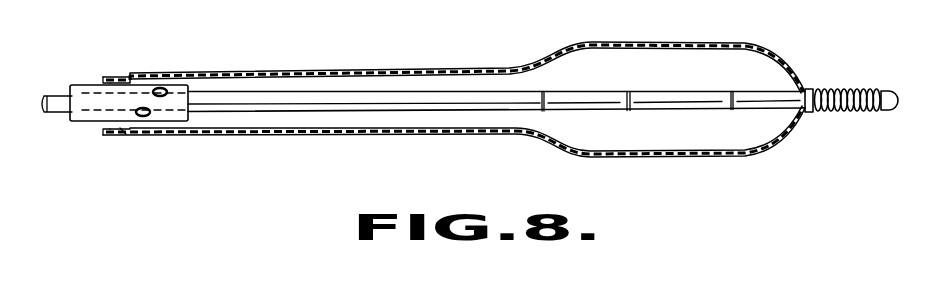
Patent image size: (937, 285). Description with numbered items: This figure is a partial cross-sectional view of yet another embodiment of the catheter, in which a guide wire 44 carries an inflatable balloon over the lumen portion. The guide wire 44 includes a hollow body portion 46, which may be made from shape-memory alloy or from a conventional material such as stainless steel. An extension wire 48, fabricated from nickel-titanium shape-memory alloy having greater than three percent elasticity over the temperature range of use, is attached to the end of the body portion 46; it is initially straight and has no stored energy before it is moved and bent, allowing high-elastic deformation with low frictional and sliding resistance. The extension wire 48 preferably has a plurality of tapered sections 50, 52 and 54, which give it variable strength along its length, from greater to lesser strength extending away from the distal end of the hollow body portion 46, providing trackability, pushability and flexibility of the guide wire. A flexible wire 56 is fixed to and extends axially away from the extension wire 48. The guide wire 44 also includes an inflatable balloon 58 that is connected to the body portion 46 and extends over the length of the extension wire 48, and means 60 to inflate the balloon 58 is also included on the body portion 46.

The guide wire 44 is at (597, 38).
The body portion 46 is at (92, 123).
The extension wire 48 is at (492, 110).
The tapered section 50 is at (591, 91).
The tapered section 52 is at (661, 91).
The tapered section 54 is at (750, 90).
The flexible wire 56 is at (847, 91).
The inflatable balloon 58 is at (662, 158).
The means to inflate the balloon 60 is at (165, 88).